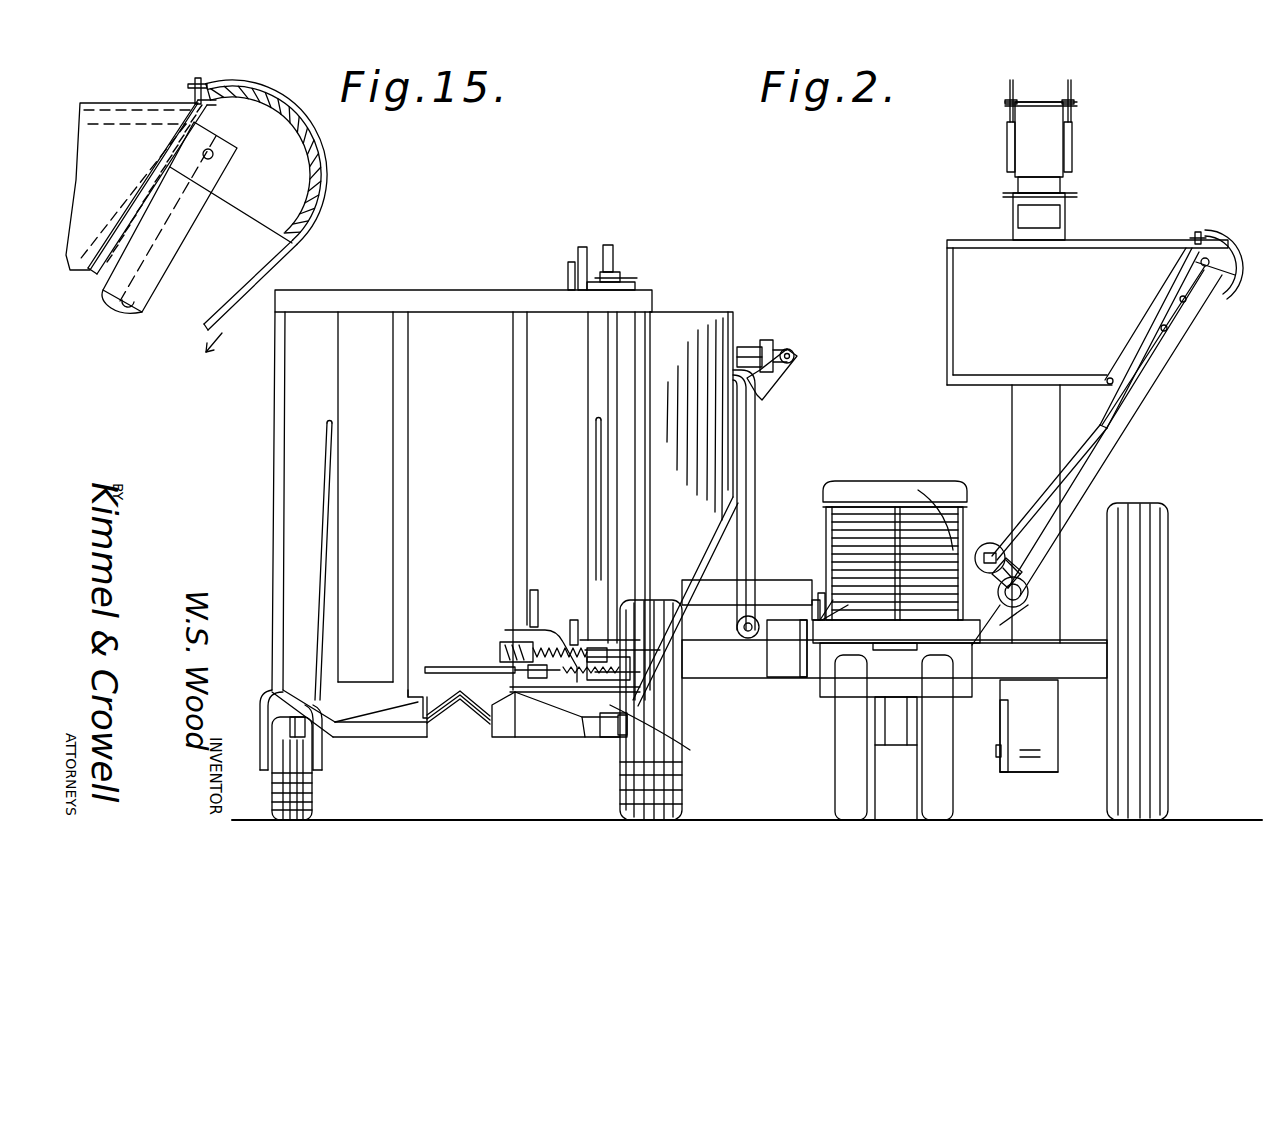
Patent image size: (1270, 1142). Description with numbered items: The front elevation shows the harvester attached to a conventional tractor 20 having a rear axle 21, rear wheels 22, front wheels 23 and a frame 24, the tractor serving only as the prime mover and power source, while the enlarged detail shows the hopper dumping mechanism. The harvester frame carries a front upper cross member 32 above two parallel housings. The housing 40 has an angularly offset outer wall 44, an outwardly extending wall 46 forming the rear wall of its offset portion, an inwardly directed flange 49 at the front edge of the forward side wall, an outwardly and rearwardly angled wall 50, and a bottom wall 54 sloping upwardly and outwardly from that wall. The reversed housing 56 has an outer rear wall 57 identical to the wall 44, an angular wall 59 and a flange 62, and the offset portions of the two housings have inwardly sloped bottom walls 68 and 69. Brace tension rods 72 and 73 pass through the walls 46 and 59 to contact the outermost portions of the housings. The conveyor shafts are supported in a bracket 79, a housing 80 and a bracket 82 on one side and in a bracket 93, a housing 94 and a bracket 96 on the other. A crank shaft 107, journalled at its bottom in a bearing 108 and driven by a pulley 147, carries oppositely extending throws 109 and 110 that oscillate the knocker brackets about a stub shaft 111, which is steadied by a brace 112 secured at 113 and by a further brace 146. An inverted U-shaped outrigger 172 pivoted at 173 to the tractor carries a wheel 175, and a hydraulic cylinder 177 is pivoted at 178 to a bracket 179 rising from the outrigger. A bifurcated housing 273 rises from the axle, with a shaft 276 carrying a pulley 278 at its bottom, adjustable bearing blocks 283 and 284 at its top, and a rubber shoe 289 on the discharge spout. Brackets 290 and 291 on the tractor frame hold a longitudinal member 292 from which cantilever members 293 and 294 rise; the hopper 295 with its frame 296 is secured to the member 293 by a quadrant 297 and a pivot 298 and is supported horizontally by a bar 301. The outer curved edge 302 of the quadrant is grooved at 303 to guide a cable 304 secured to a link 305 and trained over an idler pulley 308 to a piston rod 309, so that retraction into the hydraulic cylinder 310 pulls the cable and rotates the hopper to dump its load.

In FIG. 2, the tractor structure 20 is at (896, 569).
In FIG. 2, the rear axle 21 is at (733, 680).
In FIG. 2, the rear wheels 22 is at (1170, 790).
In FIG. 2, the front wheels 23 is at (932, 780).
In FIG. 2, the frame 24 is at (830, 675).
In FIG. 2, the front upper cross member 32 is at (433, 300).
In FIG. 2, the housing 40 is at (518, 722).
In FIG. 2, the angularly offset outer wall 44 is at (538, 501).
In FIG. 2, the outwardly extending wall 46 is at (620, 323).
In FIG. 2, the inwardly directed flange 49 is at (646, 352).
In FIG. 2, the outwardly and rearwardly angled wall 50 is at (691, 416).
In FIG. 2, the bottom wall 54 is at (710, 528).
In FIG. 2, the housing 56 is at (372, 737).
In FIG. 2, the outer rear wall 57 is at (376, 504).
In FIG. 2, the outwardly extending angular wall 59 is at (342, 497).
In FIG. 2, the inwardly directed flange 62 is at (283, 444).
In FIG. 2, the inwardly sloped bottom wall 68 is at (610, 720).
In FIG. 2, the inwardly sloped bottom wall 69 is at (288, 702).
In FIG. 2, the brace tension rod 72 is at (592, 496).
In FIG. 2, the brace tension rod 73 is at (322, 539).
In FIG. 2, the bracket 79 is at (458, 722).
In FIG. 2, the housing 80 is at (618, 738).
In FIG. 2, the bracket 82 is at (610, 743).
In FIG. 2, the bracket 93 is at (412, 702).
In FIG. 2, the housing 94 is at (266, 698).
In FIG. 2, the bracket 96 is at (297, 728).
In FIG. 2, the shaft 107 is at (612, 472).
In FIG. 2, the bearing 108 is at (678, 740).
In FIG. 2, the crank throw 109 is at (575, 650).
In FIG. 2, the crank throw 110 is at (618, 664).
In FIG. 2, the stub shaft 111 is at (537, 606).
In FIG. 2, the brace 112 is at (580, 626).
In FIG. 2, the securing point 113 is at (562, 606).
In FIG. 2, the brace 146 is at (505, 632).
In FIG. 2, the pulley 147 is at (634, 286).
In FIG. 2, the inverted U-shaped outrigger 172 is at (752, 430).
In FIG. 2, the pivot 173 is at (746, 638).
In FIG. 2, the wheel 175 is at (312, 806).
In FIG. 2, the hydraulic cylinder 177 is at (748, 347).
In FIG. 2, the pivot 178 is at (792, 356).
In FIG. 2, the bracket 179 is at (792, 384).
In FIG. 2, the bifurcated housing 273 is at (1020, 468).
In FIG. 2, the shaft 276 is at (1000, 755).
In FIG. 2, the pulley 278 is at (998, 736).
In FIG. 2, the adjustable bearing block 283 is at (1006, 158).
In FIG. 2, the adjustable bearing block 284 is at (1074, 158).
In FIG. 2, the rubber shoe 289 is at (1066, 218).
In FIG. 2, the bracket 290 is at (965, 539).
In FIG. 2, the bracket 291 is at (1016, 606).
In FIG. 2, the longitudinal horizontal member 292 is at (1030, 592).
In FIG. 15, the cantilever member 293 is at (150, 262).
In FIG. 2, the cantilever member 293 is at (1128, 444).
In FIG. 2, the cantilever member 294 is at (1180, 310).
In FIG. 15, the hopper 295 is at (132, 186).
In FIG. 2, the hopper 295 is at (1087, 312).
In FIG. 15, the frame 296 is at (132, 116).
In FIG. 2, the frame 296 is at (1170, 288).
In FIG. 15, the quadrant 297 is at (232, 196).
In FIG. 2, the quadrant 297 is at (1232, 232).
In FIG. 2, the pivot 298 is at (1208, 270).
In FIG. 2, the bar 301 is at (1110, 390).
In FIG. 15, the outer curved edge 302 is at (330, 184).
In FIG. 15, the groove 303 is at (326, 150).
In FIG. 15, the cable 304 is at (292, 247).
In FIG. 2, the cable 304 is at (1160, 385).
In FIG. 15, the link 305 is at (206, 84).
In FIG. 2, the idler pulley 308 is at (1024, 570).
In FIG. 2, the piston rod 309 is at (1006, 556).
In FIG. 2, the hydraulic cylinder 310 is at (991, 543).